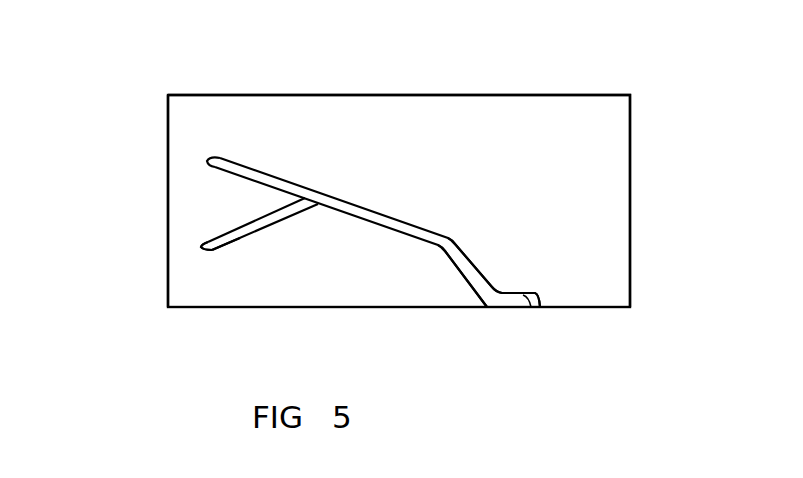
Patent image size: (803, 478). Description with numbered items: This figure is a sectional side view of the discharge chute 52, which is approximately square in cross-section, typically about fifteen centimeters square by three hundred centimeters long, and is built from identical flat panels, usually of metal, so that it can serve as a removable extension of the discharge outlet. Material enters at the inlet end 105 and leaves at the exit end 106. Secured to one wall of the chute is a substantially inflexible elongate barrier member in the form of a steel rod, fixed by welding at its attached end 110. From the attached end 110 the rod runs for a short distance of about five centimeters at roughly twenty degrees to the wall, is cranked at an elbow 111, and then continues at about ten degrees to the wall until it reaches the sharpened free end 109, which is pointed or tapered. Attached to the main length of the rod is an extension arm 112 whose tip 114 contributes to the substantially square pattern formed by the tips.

The discharge chute 52 is at (330, 95).
The inlet end 105 is at (633, 115).
The exit end 106 is at (166, 181).
The free end 109 is at (212, 156).
The attached end 110 is at (531, 307).
The elbow 111 is at (456, 239).
The extension arm 112 is at (243, 225).
The tip 114 is at (199, 249).